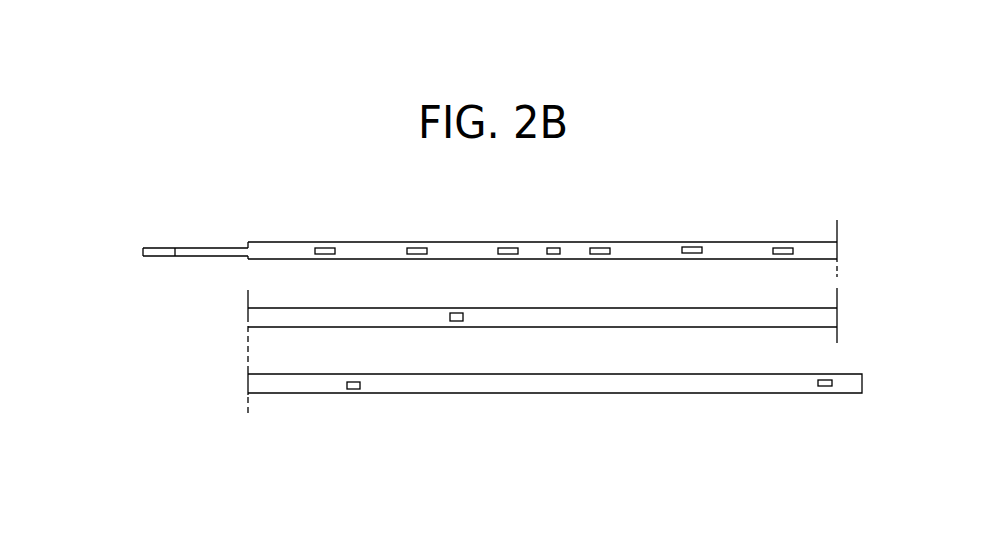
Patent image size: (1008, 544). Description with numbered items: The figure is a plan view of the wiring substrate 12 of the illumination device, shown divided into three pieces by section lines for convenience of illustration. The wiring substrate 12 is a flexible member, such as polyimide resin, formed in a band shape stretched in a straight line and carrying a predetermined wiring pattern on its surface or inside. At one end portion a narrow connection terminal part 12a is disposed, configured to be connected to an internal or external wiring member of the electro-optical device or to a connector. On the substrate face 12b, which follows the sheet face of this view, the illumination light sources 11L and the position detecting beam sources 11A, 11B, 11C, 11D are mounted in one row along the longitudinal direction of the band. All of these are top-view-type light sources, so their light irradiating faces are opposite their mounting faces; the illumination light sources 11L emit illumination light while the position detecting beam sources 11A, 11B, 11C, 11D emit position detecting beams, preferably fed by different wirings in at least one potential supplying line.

The wiring substrate 12 is at (238, 344).
The connection terminal part 12a is at (162, 257).
The substrate face 12b is at (262, 252).
The illumination light source 11L is at (414, 255).
The position detecting beam source 11A is at (553, 255).
The position detecting beam source 11B is at (818, 383).
The position detecting beam source 11C is at (353, 389).
The position detecting beam source 11D is at (456, 322).